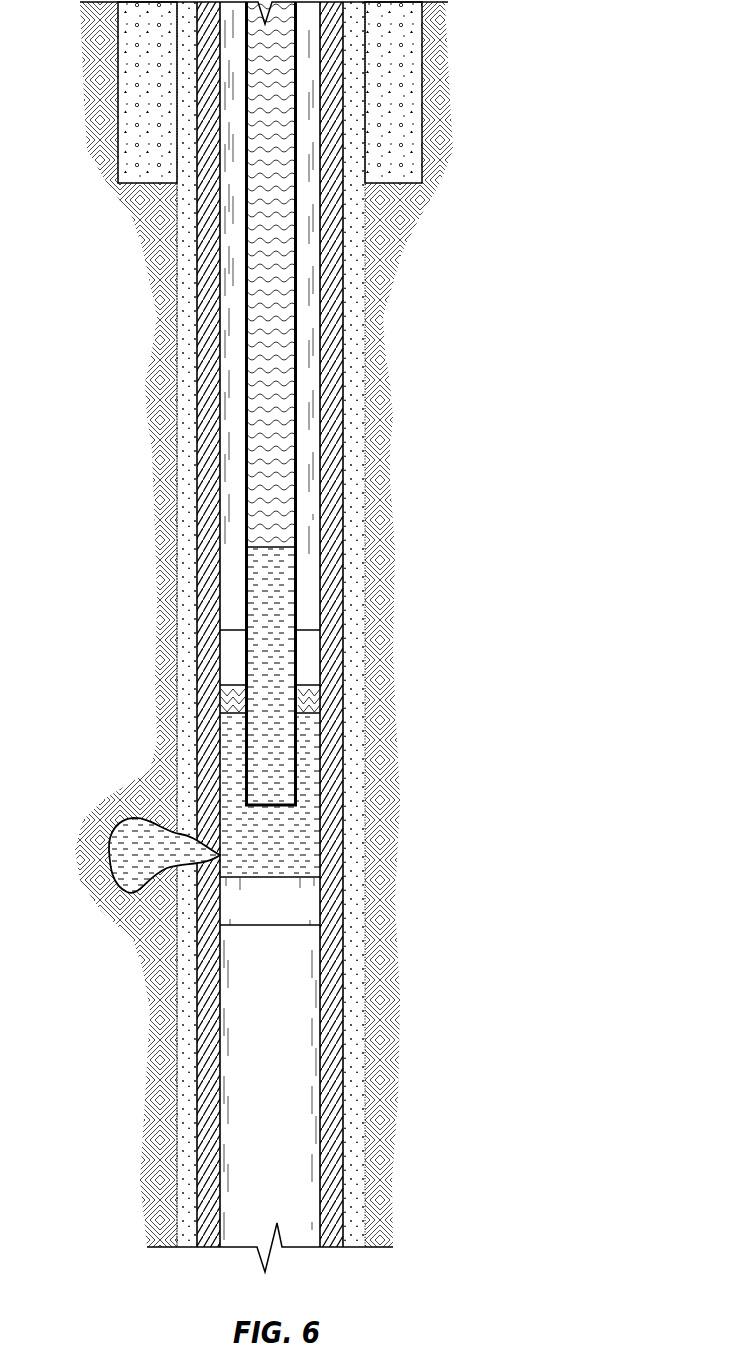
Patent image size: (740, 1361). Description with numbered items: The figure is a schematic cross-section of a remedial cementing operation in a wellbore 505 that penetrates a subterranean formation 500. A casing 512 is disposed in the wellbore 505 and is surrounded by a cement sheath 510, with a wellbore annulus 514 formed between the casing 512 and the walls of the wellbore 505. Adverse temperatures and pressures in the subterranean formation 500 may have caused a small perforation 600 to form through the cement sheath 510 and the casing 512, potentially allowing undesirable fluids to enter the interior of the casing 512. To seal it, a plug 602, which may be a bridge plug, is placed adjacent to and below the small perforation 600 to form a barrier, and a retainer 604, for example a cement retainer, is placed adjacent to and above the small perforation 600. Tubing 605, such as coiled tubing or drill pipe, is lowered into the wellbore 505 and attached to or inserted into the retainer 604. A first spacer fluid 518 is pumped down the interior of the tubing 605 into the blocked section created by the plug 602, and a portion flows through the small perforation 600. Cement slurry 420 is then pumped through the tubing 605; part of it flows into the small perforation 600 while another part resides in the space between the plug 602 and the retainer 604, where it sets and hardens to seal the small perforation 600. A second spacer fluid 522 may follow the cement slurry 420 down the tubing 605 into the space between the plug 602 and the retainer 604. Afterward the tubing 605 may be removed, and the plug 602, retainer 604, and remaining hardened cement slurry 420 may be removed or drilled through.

The cement slurry 420 is at (310, 730).
The subterranean formation 500 is at (88, 853).
The wellbore 505 is at (168, 672).
The cement sheath 510 is at (182, 928).
The casing 512 is at (216, 630).
The wellbore annulus 514 is at (232, 328).
The first spacer fluid 518 is at (310, 695).
The second spacer fluid 522 is at (287, 260).
The small perforation 600 is at (103, 822).
The plug 602 is at (310, 897).
The retainer 604 is at (310, 645).
The tubing 605 is at (245, 283).